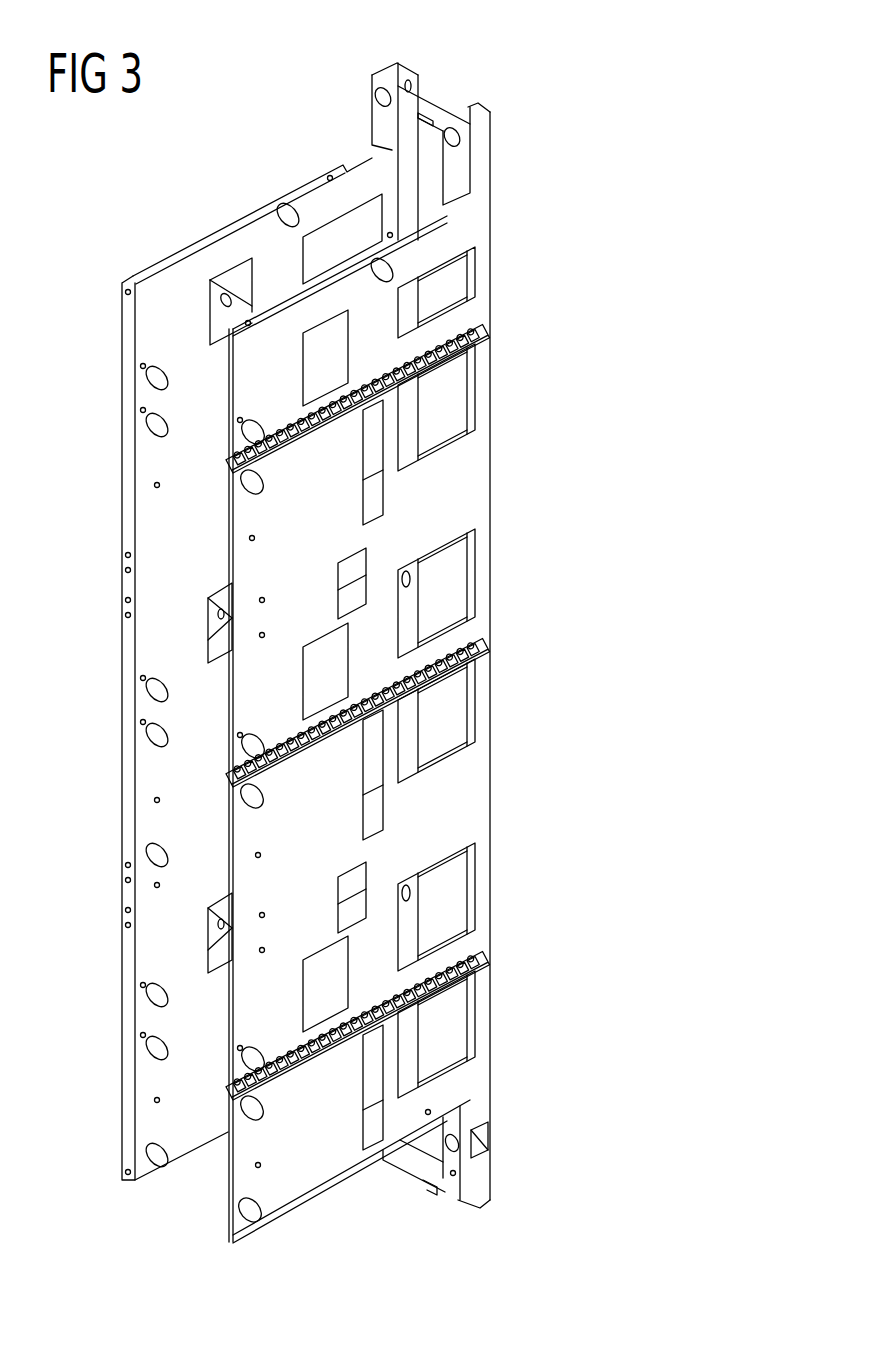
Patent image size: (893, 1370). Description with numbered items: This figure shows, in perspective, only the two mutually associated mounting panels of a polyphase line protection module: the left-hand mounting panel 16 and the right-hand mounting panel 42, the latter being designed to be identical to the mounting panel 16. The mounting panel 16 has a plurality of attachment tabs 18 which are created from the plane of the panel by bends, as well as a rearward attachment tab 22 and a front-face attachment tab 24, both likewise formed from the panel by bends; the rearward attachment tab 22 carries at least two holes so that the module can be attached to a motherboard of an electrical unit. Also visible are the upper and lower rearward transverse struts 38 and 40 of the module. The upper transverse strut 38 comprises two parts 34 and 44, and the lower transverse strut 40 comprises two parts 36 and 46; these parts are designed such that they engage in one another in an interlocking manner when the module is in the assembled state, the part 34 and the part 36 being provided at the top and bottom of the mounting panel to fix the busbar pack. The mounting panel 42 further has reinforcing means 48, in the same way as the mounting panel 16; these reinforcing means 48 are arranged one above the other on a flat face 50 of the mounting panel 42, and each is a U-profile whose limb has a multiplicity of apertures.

The mounting panel 16 is at (186, 432).
The attachment tabs 18 is at (228, 313).
The rearward attachment tab 22 is at (422, 90).
The front-face attachment tab 24 is at (129, 343).
The part 34 is at (402, 113).
The part 36 is at (400, 1162).
The upper transverse strut 38 is at (427, 136).
The lower transverse strut 40 is at (433, 1190).
The mounting panel 42 is at (289, 522).
The part 44 is at (438, 123).
The part 46 is at (452, 1185).
The reinforcing means 48 is at (438, 680).
The flat face 50 is at (440, 486).